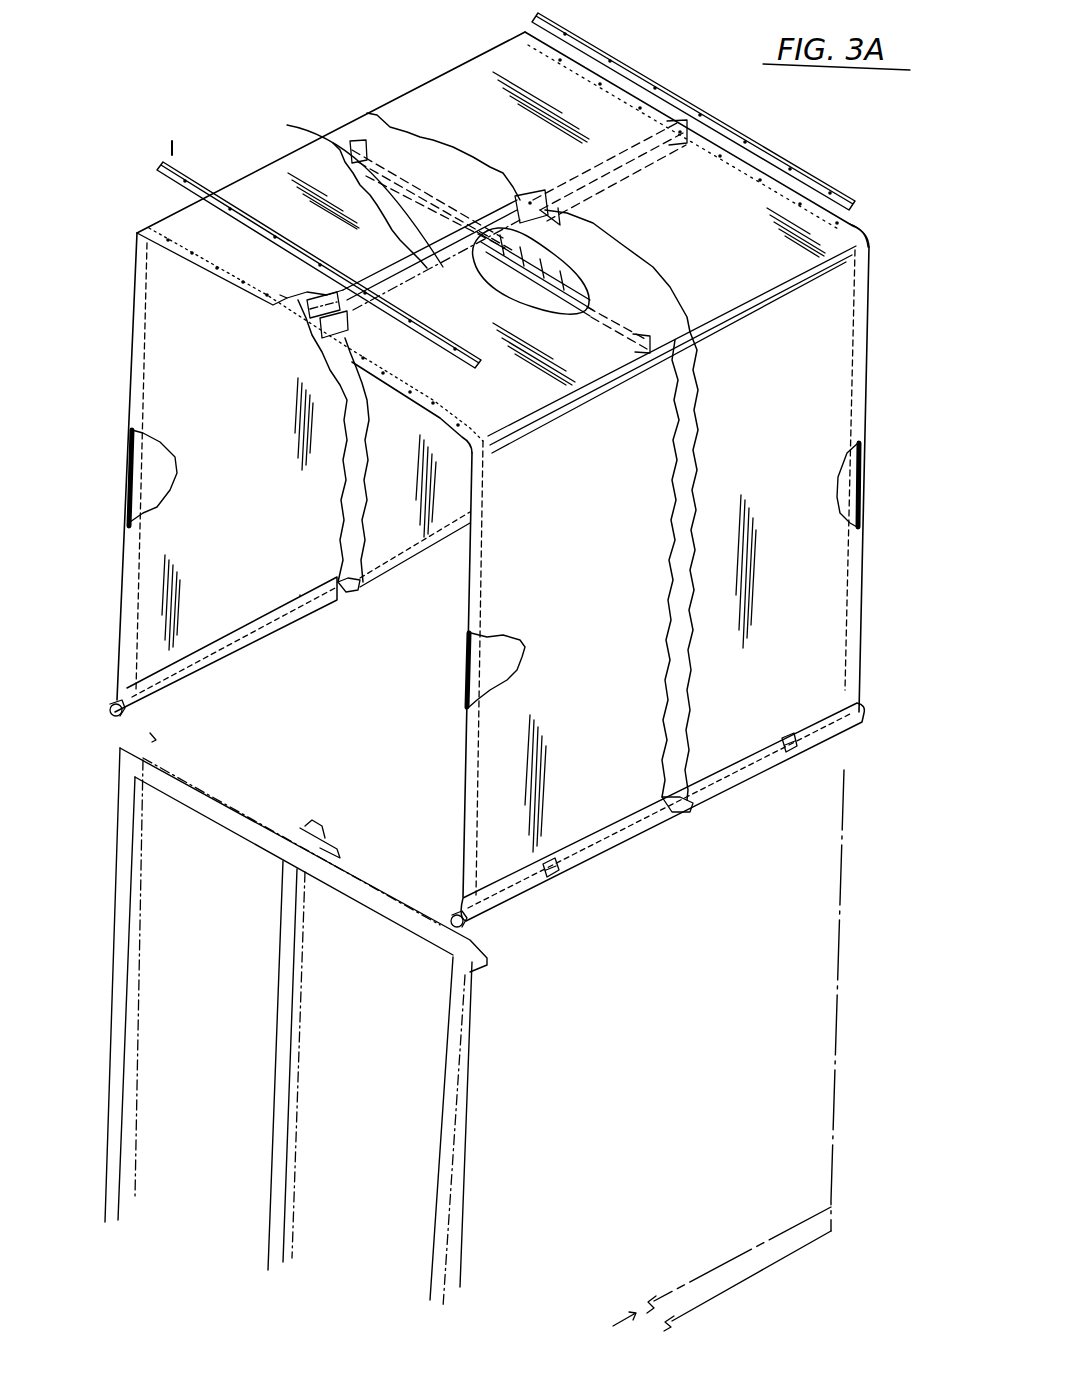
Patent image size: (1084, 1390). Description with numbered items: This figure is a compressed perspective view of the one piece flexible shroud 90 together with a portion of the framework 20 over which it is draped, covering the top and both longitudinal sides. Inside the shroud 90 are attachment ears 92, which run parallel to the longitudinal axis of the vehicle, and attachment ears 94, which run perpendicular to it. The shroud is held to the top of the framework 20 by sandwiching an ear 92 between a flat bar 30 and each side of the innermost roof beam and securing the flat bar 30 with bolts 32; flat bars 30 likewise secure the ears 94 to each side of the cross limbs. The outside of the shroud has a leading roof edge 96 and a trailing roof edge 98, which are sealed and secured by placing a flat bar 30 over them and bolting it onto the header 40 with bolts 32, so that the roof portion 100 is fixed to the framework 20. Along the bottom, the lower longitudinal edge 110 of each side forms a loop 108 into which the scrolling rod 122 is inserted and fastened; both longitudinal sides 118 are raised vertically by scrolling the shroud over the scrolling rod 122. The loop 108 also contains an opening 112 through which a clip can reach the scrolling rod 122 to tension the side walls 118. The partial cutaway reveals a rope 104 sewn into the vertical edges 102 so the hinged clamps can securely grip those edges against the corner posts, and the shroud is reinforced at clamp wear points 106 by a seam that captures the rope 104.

The framework 20 is at (243, 802).
The flat bar 30 is at (210, 187).
The bolt 32 is at (169, 149).
The header 40 is at (340, 867).
The one piece flexible shroud 90 is at (374, 84).
The attachment ear 92 is at (330, 340).
The attachment ear 94 is at (335, 122).
The leading roof edge 96 is at (854, 228).
The trailing roof edge 98 is at (250, 293).
The roof portion 100 is at (733, 237).
The vertical edge 102 is at (134, 355).
The rope 104 is at (130, 480).
The clamp wear point 106 is at (148, 391).
The loop 108 is at (188, 667).
The lower longitudinal edge 110 is at (277, 628).
The opening 112 is at (556, 874).
The longitudinal side 118 is at (268, 483).
The scrolling rod 122 is at (110, 709).